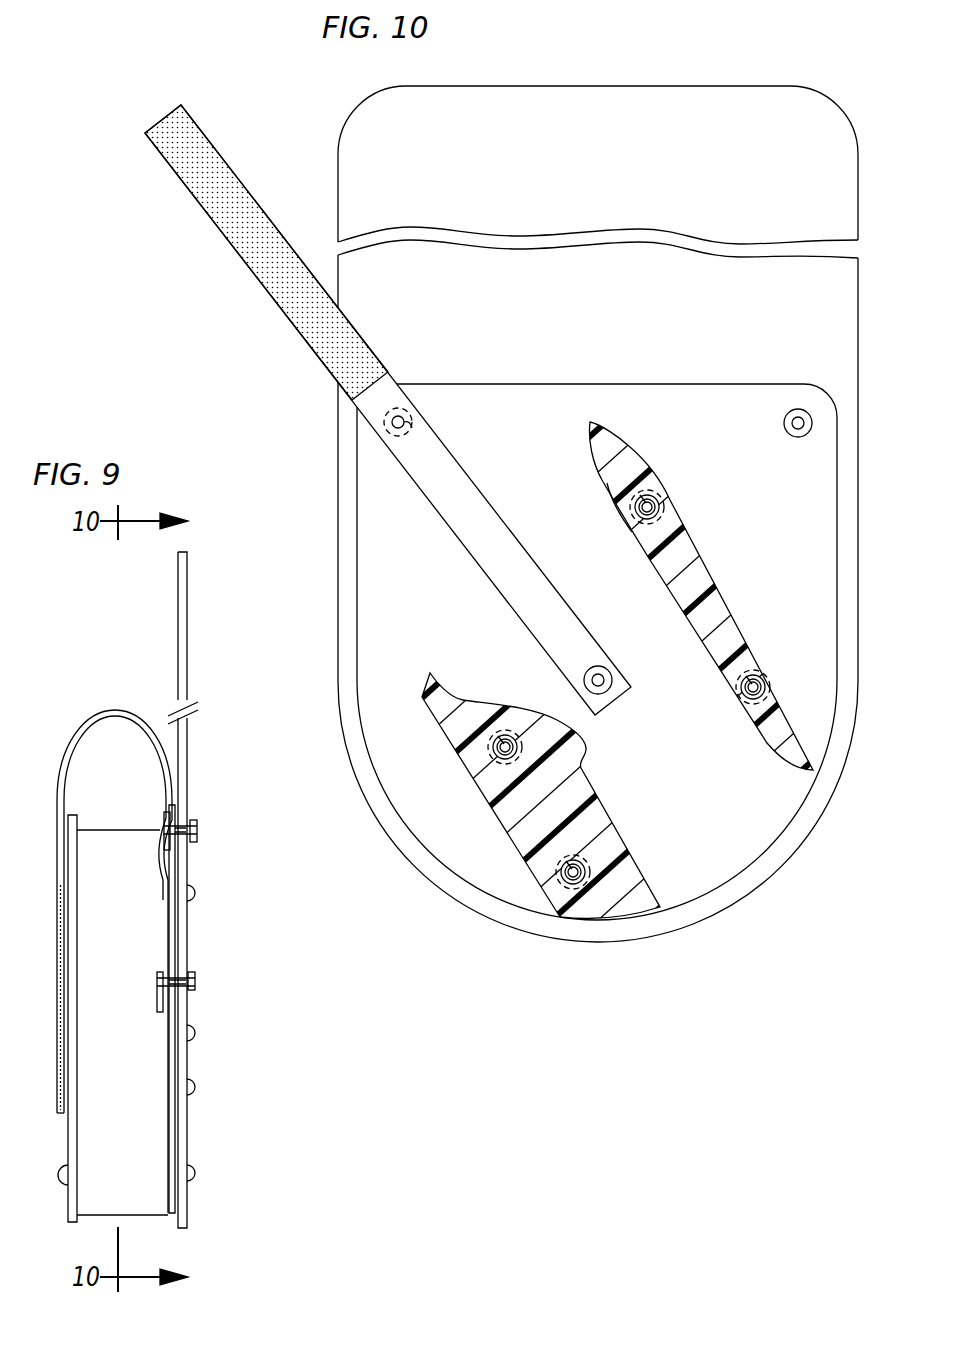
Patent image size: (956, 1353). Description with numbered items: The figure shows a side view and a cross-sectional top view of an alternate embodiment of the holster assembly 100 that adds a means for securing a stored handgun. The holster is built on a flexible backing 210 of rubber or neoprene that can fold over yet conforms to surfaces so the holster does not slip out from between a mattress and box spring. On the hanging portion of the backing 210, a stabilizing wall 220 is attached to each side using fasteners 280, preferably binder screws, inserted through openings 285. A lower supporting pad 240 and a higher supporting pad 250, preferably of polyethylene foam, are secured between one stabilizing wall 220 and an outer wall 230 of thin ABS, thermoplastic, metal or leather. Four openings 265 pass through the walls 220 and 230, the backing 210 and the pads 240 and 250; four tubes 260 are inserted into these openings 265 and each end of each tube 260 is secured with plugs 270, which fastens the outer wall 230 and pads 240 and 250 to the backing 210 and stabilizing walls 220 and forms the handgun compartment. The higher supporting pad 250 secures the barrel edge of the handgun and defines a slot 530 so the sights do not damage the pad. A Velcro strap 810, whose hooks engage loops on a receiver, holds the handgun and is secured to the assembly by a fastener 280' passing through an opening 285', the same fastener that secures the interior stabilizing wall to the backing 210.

In FIG. 10, the holster assembly 100 is at (652, 80).
In FIG. 9, the holster assembly 100 is at (229, 618).
In FIG. 10, the backing 210 is at (337, 258).
In FIG. 9, the backing 210 is at (188, 743).
In FIG. 10, the stabilizing wall 220 is at (533, 384).
In FIG. 9, the stabilizing wall 220 is at (167, 1203).
In FIG. 9, the outer wall 230 is at (83, 830).
In FIG. 10, the lower supporting pad 240 is at (638, 876).
In FIG. 10, the higher supporting pad 250 is at (770, 750).
In FIG. 10, the tube 260 is at (660, 508).
In FIG. 10, the opening 265 is at (636, 510).
In FIG. 10, the plug 270 is at (660, 492).
In FIG. 10, the fastener 280 is at (598, 411).
In FIG. 9, the fastener 280 is at (210, 825).
In FIG. 10, the opening 285 is at (601, 454).
In FIG. 9, the opening 285 is at (211, 853).
In FIG. 10, the fastener 280' is at (624, 654).
In FIG. 9, the fastener 280' is at (208, 976).
In FIG. 10, the opening 285' is at (624, 711).
In FIG. 9, the opening 285' is at (210, 1005).
In FIG. 10, the slot 530 is at (637, 533).
In FIG. 10, the strap 810 is at (280, 310).
In FIG. 9, the strap 810 is at (110, 710).